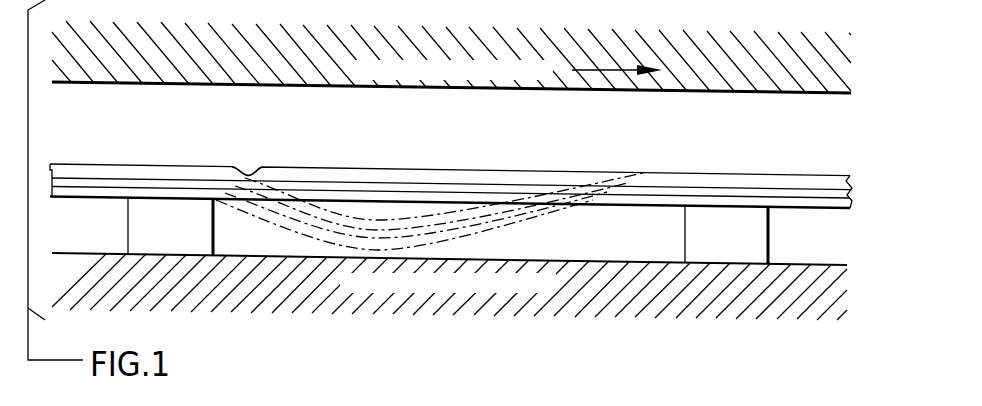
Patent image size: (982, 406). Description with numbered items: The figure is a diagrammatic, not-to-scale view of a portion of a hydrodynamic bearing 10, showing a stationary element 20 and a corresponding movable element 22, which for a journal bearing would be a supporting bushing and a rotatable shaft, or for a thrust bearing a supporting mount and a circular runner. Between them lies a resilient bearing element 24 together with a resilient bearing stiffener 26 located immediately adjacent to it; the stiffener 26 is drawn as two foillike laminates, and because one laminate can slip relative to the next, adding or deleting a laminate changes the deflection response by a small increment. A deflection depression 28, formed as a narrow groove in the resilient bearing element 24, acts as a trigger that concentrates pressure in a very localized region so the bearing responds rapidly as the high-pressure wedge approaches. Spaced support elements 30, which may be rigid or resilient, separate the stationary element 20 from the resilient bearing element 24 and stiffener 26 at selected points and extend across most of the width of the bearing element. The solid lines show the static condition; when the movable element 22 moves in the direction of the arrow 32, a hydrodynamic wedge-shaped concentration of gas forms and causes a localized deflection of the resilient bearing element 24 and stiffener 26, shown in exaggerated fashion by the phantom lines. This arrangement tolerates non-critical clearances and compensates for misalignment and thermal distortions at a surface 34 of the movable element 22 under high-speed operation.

The bearing 10 is at (449, 241).
The stationary element 20 is at (597, 309).
The movable element 22 is at (451, 58).
The resilient bearing element 24 is at (449, 189).
The resilient bearing stiffener 26 is at (55, 180).
The deflection depression 28 is at (249, 177).
The support elements 30 is at (183, 233).
The arrow 32 is at (612, 68).
The surface of the movable element 34 is at (200, 85).